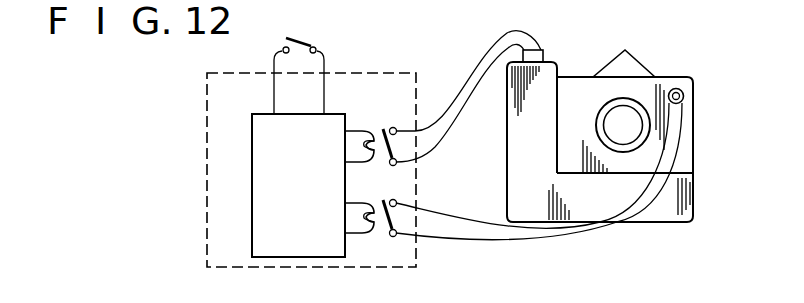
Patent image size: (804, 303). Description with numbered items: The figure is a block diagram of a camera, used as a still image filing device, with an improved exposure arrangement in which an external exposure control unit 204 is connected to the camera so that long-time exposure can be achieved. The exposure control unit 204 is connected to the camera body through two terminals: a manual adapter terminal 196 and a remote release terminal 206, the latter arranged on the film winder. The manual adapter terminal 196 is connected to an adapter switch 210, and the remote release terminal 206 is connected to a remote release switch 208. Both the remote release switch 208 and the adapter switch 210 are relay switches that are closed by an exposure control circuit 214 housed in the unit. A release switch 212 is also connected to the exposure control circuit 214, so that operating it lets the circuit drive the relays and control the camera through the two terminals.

The manual adapter terminal 196 is at (676, 88).
The exposure control unit 204 is at (412, 72).
The remote release terminal 206 is at (546, 60).
The remote release switch 208 is at (381, 126).
The adapter switch 210 is at (381, 200).
The release switch 212 is at (317, 48).
The exposure control circuit 214 is at (252, 218).